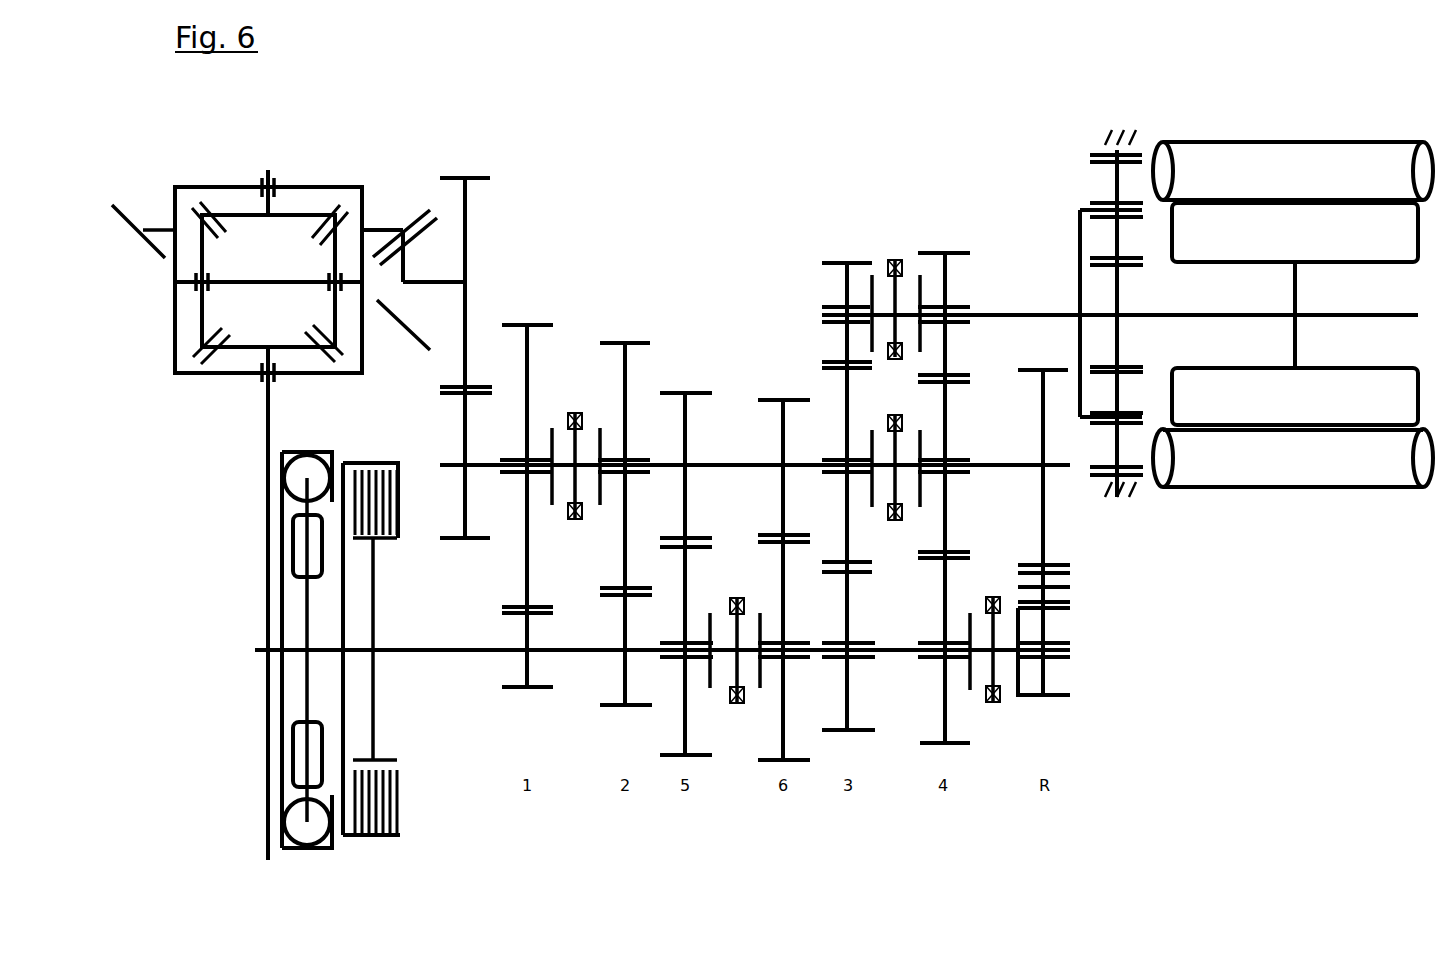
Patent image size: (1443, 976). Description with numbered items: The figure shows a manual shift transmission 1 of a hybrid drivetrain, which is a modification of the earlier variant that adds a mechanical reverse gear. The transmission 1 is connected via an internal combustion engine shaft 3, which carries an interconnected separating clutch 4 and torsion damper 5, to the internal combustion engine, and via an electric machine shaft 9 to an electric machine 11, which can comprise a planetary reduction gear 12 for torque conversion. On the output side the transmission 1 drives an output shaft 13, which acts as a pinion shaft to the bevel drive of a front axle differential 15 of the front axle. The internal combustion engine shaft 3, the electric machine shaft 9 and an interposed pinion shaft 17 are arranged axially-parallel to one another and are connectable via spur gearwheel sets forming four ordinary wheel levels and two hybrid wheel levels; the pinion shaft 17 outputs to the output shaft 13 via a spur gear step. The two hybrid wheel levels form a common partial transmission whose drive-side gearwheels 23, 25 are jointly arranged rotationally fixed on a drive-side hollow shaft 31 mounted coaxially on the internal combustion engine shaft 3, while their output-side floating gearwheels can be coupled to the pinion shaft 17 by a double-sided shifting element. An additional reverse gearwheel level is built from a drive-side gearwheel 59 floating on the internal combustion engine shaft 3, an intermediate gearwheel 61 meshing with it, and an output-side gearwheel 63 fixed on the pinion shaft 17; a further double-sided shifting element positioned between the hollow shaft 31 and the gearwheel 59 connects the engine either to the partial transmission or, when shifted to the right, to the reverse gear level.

The manual shift transmission 1 is at (700, 212).
The internal combustion engine shaft 3 is at (413, 648).
The separating clutch 4 is at (372, 838).
The torsion damper 5 is at (302, 850).
The electric machine shaft 9 is at (993, 313).
The electric machine 11 is at (1342, 142).
The planetary reduction gear 12 is at (1100, 152).
The output shaft 13 is at (470, 282).
The front axle differential 15 is at (341, 186).
The pinion shaft 17 is at (447, 465).
The drive-side gearwheel 23 is at (836, 735).
The drive-side gearwheel 25 is at (927, 745).
The drive-side hollow shaft 31 is at (898, 652).
The drive-side gearwheel 59 is at (1068, 693).
The intermediate gearwheel 61 is at (1068, 590).
The output-side gearwheel 63 is at (1063, 555).